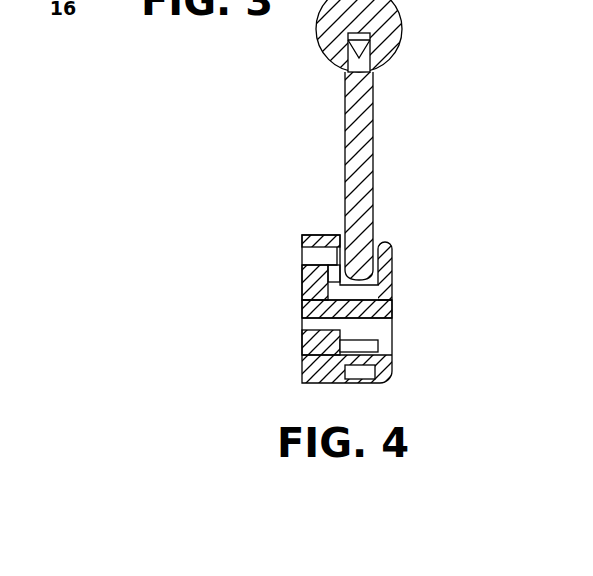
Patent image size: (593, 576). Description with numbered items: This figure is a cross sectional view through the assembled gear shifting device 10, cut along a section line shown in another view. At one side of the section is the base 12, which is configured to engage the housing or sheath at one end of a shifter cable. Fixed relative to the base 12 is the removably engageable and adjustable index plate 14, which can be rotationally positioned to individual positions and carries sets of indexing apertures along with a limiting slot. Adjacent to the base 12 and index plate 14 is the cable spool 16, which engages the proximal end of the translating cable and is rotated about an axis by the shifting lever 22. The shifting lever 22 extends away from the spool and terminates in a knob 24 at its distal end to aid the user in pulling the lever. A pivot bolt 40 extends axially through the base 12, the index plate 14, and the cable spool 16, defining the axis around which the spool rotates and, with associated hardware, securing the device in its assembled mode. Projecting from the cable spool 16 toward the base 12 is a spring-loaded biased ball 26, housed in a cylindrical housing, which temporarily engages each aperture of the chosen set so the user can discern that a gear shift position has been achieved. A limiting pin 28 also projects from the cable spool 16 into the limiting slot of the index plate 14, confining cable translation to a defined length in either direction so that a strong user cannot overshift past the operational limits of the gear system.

The gear shifting device 10 is at (105, 290).
The base 12 is at (302, 282).
The index plate 14 is at (338, 357).
The cable spool 16 is at (392, 247).
The shifting lever 22 is at (373, 178).
The knob 24 is at (402, 23).
The biased ball 26 is at (373, 375).
The limiting pin 28 is at (350, 343).
The pivot bolt 40 is at (390, 317).